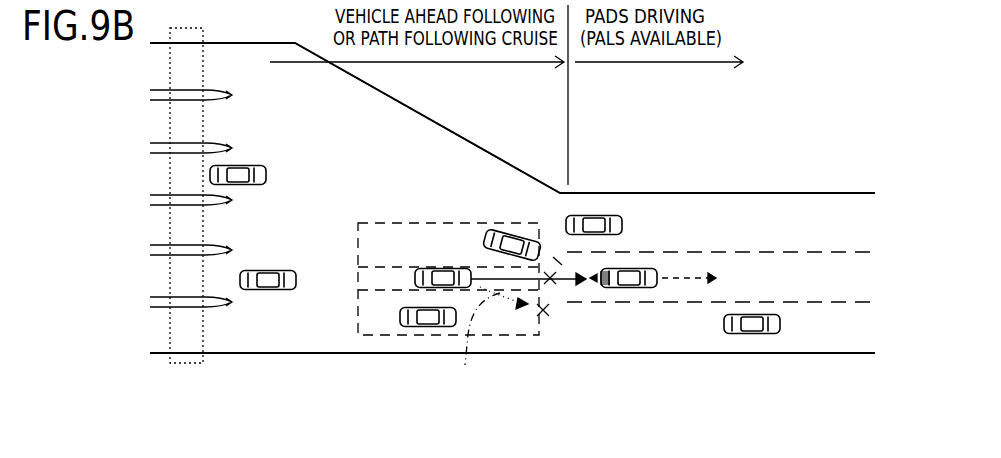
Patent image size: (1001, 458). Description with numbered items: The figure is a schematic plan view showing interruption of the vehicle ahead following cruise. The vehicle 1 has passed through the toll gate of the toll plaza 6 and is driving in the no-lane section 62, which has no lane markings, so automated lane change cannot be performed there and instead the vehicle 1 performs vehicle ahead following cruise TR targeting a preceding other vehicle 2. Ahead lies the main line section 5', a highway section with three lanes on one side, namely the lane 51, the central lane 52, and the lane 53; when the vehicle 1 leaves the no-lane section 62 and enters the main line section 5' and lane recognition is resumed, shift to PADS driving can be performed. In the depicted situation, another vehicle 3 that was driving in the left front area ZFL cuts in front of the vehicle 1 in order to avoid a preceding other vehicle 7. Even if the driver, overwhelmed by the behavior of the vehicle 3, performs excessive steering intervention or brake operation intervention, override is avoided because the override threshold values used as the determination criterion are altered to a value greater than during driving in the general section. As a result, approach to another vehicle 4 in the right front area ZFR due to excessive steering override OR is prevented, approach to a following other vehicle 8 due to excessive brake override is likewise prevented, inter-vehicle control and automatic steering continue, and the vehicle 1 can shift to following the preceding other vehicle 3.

The vehicle 1 is at (440, 268).
The preceding other vehicle 2 is at (640, 290).
The other vehicle 3 is at (495, 232).
The other vehicle 4 is at (395, 320).
The main line section 5' is at (512, 198).
The toll plaza 6 is at (453, 132).
The preceding other vehicle 7 is at (597, 215).
The following other vehicle 8 is at (277, 270).
The lane 51 is at (845, 326).
The central lane 52 is at (845, 275).
The lane 53 is at (845, 221).
The no-lane section 62 is at (334, 149).
The left front area ZFL is at (528, 225).
The right front area ZFR is at (495, 337).
The vehicle ahead following cruise TR is at (562, 283).
The steering override OR is at (448, 311).